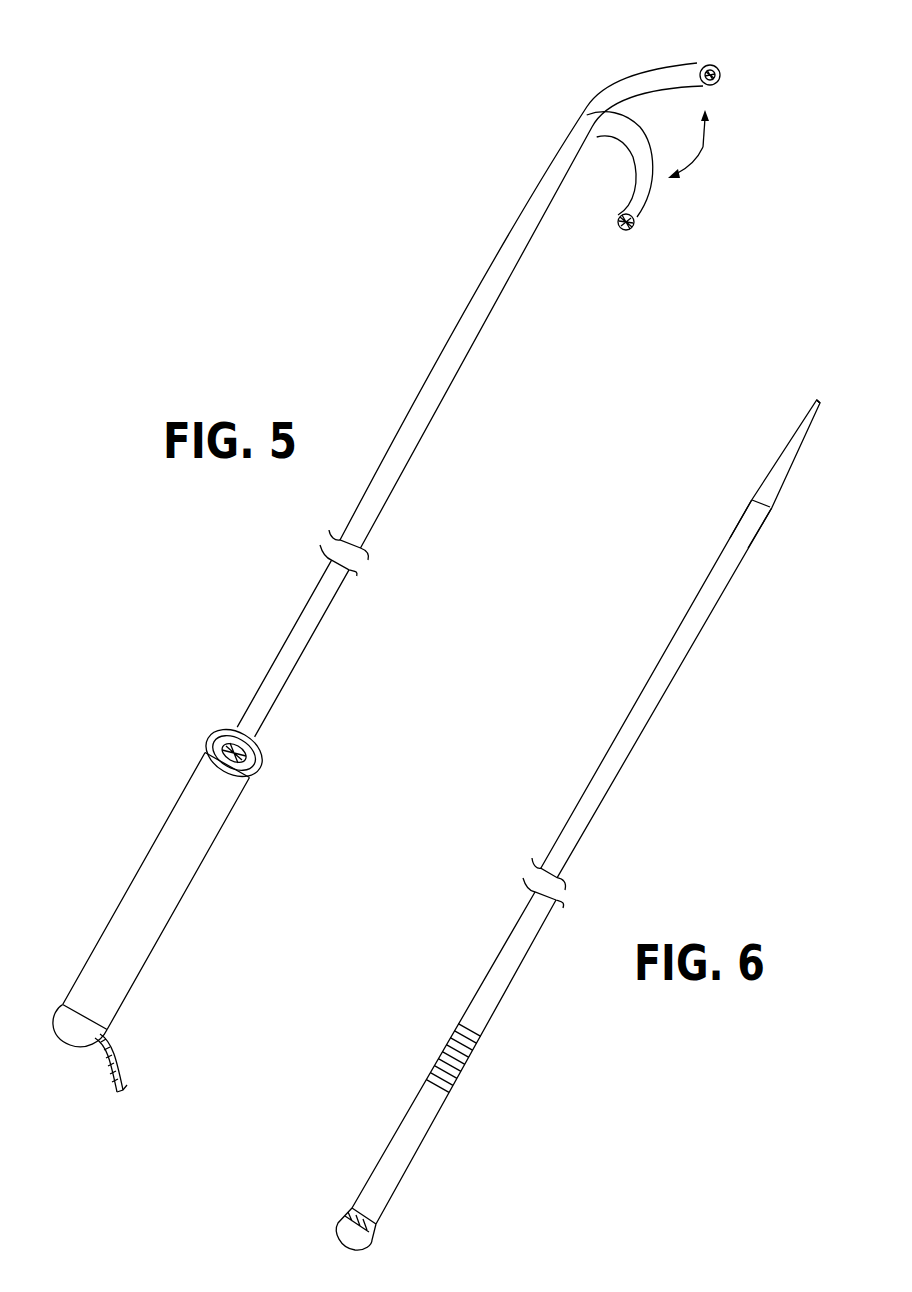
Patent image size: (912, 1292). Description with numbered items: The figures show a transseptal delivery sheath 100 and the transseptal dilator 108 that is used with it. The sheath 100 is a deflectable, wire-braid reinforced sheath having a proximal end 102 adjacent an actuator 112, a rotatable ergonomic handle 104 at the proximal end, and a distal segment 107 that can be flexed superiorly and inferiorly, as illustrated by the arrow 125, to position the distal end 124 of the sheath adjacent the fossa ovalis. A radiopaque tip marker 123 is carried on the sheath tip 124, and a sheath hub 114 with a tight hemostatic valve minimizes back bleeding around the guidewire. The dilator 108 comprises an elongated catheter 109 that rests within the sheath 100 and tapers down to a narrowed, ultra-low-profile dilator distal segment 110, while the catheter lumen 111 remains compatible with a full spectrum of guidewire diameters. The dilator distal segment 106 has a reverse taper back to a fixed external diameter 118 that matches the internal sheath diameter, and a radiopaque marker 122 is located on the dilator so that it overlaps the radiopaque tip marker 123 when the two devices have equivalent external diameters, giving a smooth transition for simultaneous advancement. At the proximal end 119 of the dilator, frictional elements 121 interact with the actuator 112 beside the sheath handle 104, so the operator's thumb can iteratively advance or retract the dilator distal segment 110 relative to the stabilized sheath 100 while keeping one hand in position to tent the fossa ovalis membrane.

In FIG. 5, the transseptal delivery sheath 100 is at (345, 306).
In FIG. 5, the proximal end 102 is at (238, 722).
In FIG. 5, the handle 104 is at (163, 847).
In FIG. 5, the distal segment 107 is at (613, 90).
In FIG. 5, the actuator 112 is at (220, 748).
In FIG. 5, the sheath hub 114 is at (63, 1008).
In FIG. 5, the radiopaque tip marker 123 is at (702, 66).
In FIG. 5, the distal end 124 is at (722, 70).
In FIG. 5, the arrow 125 is at (703, 148).
In FIG. 6, the distal segment 106 is at (773, 458).
In FIG. 6, the transseptal dilator 108 is at (558, 707).
In FIG. 6, the elongated catheter 109 is at (643, 733).
In FIG. 6, the dilator distal segment 110 is at (824, 408).
In FIG. 6, the catheter lumen 111 is at (816, 399).
In FIG. 6, the fixed external diameter 118 is at (769, 508).
In FIG. 6, the proximal end 119 is at (338, 1218).
In FIG. 6, the frictional elements 121 is at (452, 1080).
In FIG. 6, the radiopaque marker 122 is at (767, 504).